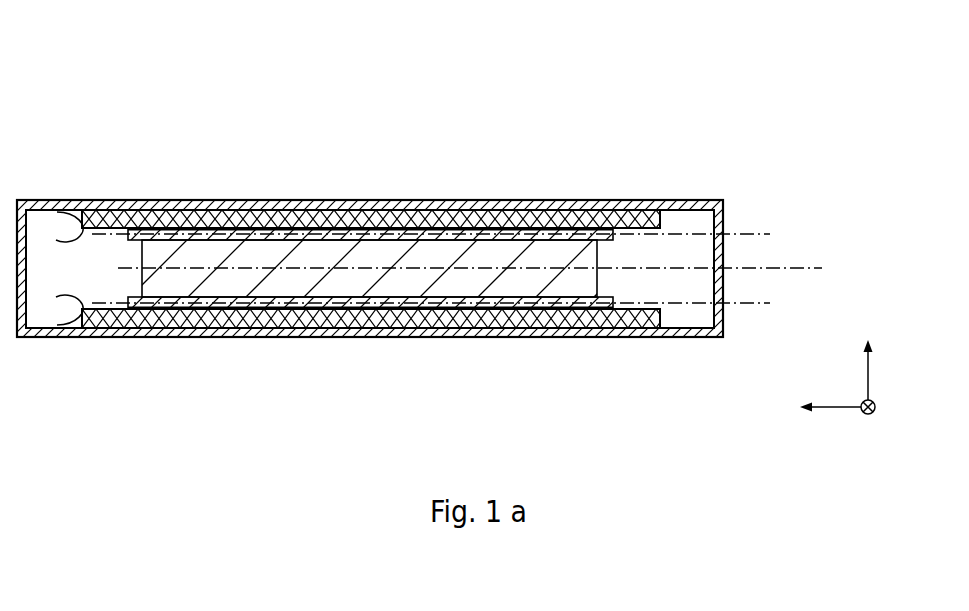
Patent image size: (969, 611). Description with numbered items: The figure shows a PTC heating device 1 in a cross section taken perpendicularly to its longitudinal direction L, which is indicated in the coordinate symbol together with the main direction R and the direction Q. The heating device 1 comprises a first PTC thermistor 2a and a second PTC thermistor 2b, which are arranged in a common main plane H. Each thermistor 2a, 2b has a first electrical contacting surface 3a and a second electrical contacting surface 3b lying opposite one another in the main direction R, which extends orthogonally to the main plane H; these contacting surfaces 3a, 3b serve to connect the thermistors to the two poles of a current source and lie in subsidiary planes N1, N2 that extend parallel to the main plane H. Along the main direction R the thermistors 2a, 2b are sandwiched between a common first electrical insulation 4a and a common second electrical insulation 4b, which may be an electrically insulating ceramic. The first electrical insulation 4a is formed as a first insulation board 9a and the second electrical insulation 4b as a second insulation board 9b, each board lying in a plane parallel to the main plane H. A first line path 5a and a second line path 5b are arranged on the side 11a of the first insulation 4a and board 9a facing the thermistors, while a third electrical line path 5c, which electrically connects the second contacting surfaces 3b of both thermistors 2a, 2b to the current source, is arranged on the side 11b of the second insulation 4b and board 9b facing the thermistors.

The PTC heating device 1 is at (703, 147).
The first PTC thermistor 2a is at (390, 220).
The second PTC thermistor 2b is at (325, 252).
The first electrical contacting surface 3a is at (247, 233).
The second electrical contacting surface 3b is at (232, 310).
The first electrical insulation 4a is at (371, 171).
The second electrical insulation 4b is at (371, 367).
The first electrical line path 5a is at (370, 191).
The second electrical line path 5b is at (430, 235).
The third electrical line path 5c is at (430, 304).
The first insulation board 9a is at (500, 195).
The second insulation board 9b is at (503, 344).
The side of the first electrical insulation facing the PTC thermistors 11a is at (57, 212).
The side of the second electrical insulation facing the PTC thermistors 11b is at (57, 325).
The first subsidiary plane N1 is at (756, 233).
The second subsidiary plane N2 is at (756, 304).
The main plane H is at (792, 267).
The main direction R is at (868, 354).
The transverse direction Q is at (822, 407).
The longitudinal direction L is at (877, 415).